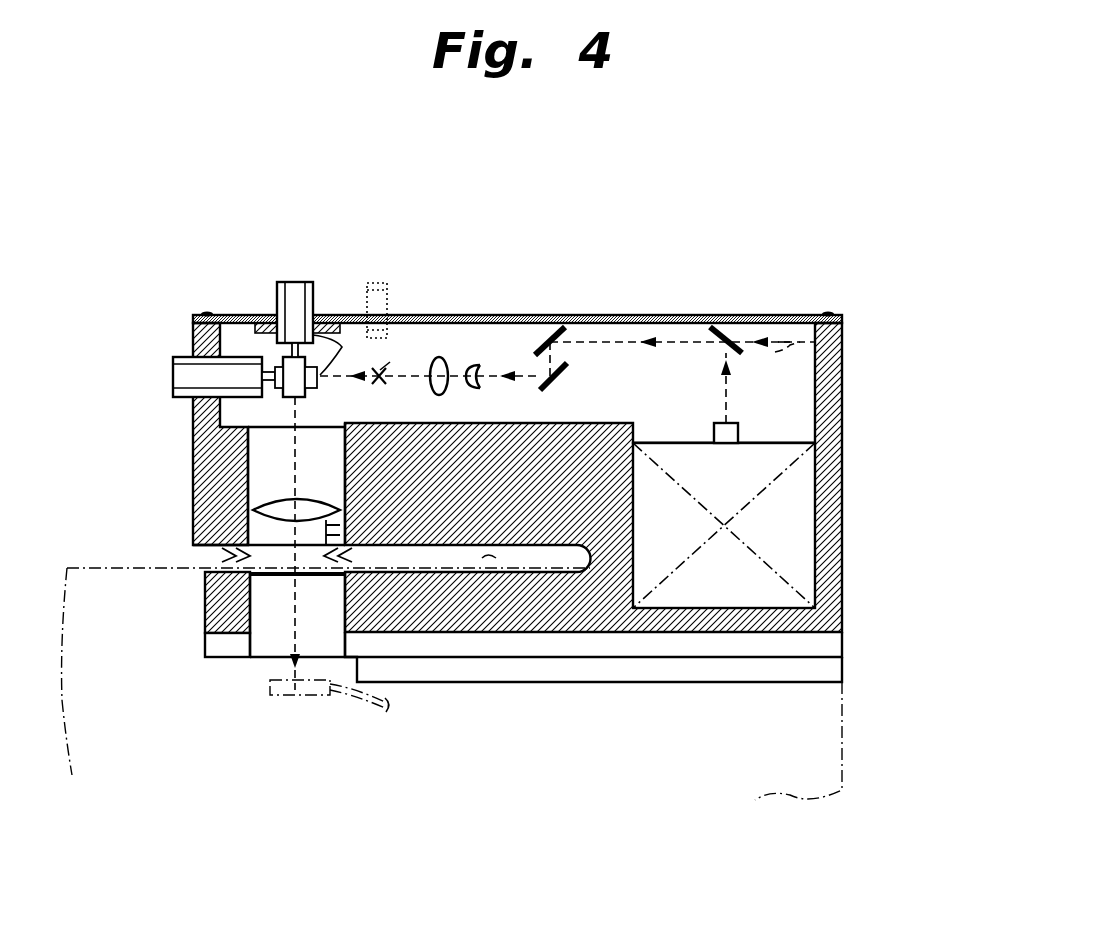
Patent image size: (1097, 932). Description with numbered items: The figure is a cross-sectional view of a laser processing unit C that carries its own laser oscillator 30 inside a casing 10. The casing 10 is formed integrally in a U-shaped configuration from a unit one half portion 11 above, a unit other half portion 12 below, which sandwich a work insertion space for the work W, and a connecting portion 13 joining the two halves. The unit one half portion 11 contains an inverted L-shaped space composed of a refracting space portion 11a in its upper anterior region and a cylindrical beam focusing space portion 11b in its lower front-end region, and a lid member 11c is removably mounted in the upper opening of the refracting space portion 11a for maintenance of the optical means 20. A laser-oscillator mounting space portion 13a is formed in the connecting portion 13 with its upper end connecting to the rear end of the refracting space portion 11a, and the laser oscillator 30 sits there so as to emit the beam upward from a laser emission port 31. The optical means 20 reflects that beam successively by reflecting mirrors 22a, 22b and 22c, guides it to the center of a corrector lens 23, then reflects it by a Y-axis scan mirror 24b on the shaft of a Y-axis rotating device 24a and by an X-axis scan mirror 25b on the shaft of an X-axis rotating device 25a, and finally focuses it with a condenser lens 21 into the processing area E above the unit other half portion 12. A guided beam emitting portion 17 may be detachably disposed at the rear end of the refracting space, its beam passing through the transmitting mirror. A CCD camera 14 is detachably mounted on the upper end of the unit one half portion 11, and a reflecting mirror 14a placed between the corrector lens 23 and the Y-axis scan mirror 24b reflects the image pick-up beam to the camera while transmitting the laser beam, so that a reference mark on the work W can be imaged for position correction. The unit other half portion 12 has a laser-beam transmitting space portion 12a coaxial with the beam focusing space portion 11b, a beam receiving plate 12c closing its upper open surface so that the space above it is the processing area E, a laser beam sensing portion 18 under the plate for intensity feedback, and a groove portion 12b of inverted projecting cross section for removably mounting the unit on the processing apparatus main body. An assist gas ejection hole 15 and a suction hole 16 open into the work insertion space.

The casing 10 is at (535, 431).
The unit one half portion 11 is at (530, 477).
The refracting space portion 11a is at (770, 330).
The beam focusing space portion 11b is at (257, 452).
The lid member 11c is at (620, 315).
The unit other half portion 12 is at (489, 649).
The laser-beam transmitting space portion 12a is at (270, 645).
The groove portion 12b is at (545, 657).
The beam receiving plate 12c is at (317, 574).
The connecting portion 13 is at (828, 477).
The laser-oscillator mounting space portion 13a is at (795, 428).
The CCD camera 14 is at (383, 256).
The reflecting mirror 14a is at (378, 382).
The assist gas ejection hole 15 is at (218, 658).
The suction hole 16 is at (365, 590).
The guided beam emitting portion 17 is at (784, 367).
The laser beam sensing portion 18 is at (298, 695).
The optical means 20 is at (500, 318).
The condenser lens 21 is at (305, 505).
The reflecting mirror 22a is at (732, 337).
The reflecting mirror 22b is at (535, 325).
The reflecting mirror 22c is at (567, 374).
The corrector lens 23 is at (408, 291).
The Y-axis rotating device 24a is at (295, 282).
The Y-axis scan mirror 24b is at (338, 315).
The X-axis rotating device 25a is at (175, 380).
The X-axis scan mirror 25b is at (317, 383).
The laser oscillator 30 is at (795, 545).
The laser emission port 31 is at (735, 425).
The work W is at (452, 670).
The processing area E is at (287, 539).
The laser processing unit C is at (575, 254).